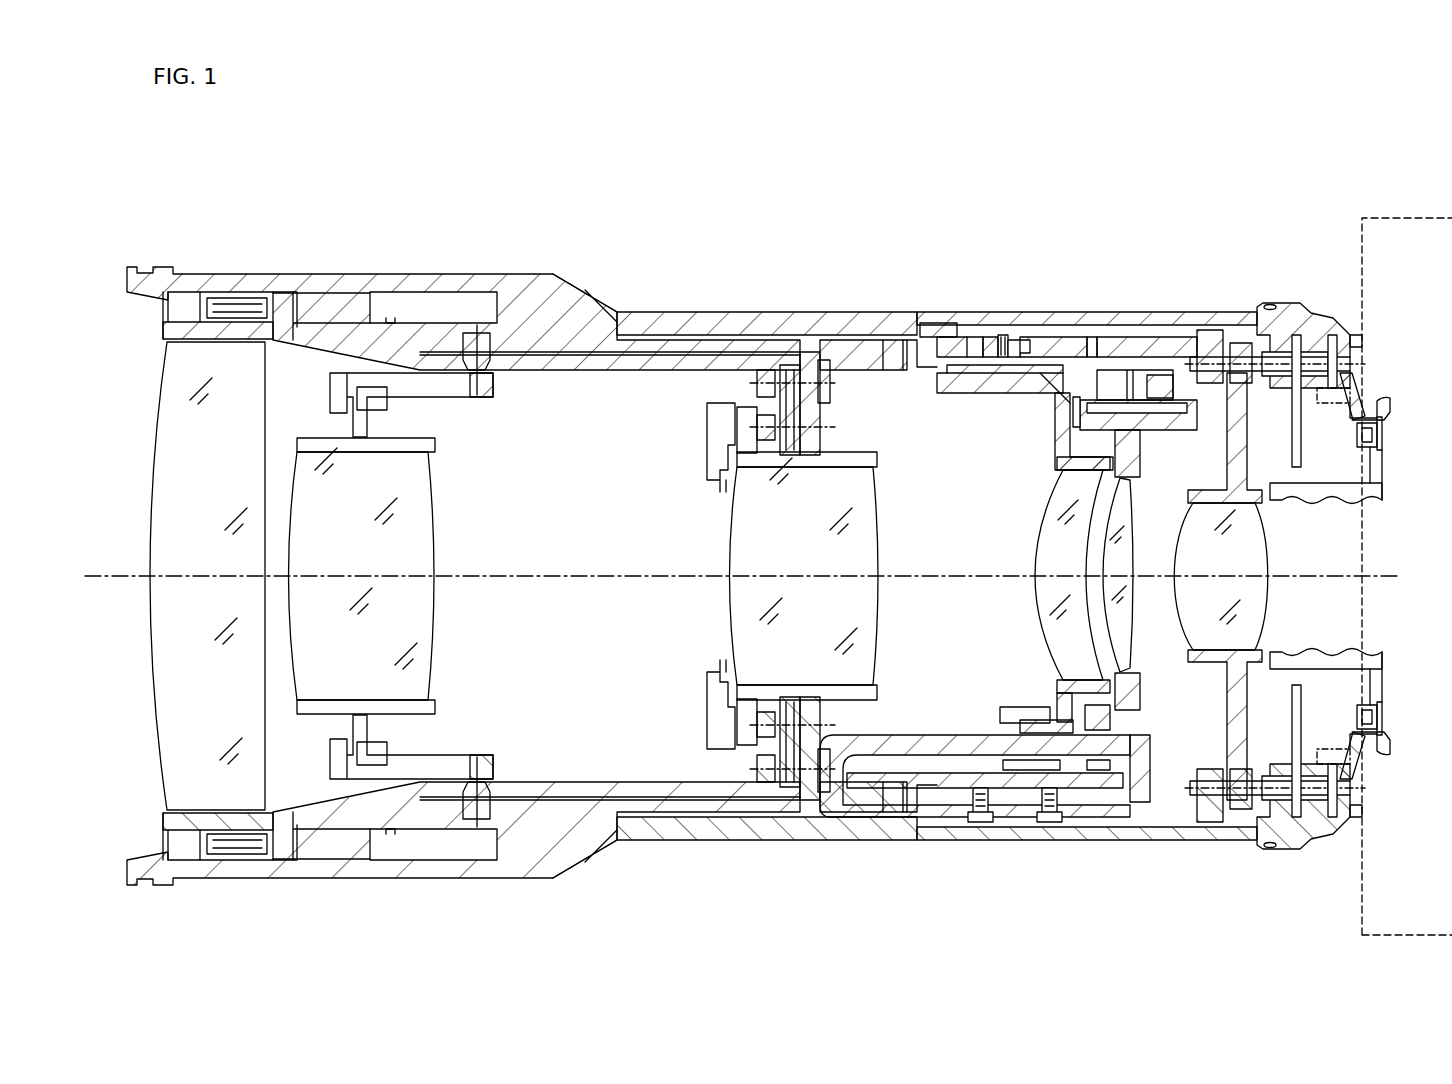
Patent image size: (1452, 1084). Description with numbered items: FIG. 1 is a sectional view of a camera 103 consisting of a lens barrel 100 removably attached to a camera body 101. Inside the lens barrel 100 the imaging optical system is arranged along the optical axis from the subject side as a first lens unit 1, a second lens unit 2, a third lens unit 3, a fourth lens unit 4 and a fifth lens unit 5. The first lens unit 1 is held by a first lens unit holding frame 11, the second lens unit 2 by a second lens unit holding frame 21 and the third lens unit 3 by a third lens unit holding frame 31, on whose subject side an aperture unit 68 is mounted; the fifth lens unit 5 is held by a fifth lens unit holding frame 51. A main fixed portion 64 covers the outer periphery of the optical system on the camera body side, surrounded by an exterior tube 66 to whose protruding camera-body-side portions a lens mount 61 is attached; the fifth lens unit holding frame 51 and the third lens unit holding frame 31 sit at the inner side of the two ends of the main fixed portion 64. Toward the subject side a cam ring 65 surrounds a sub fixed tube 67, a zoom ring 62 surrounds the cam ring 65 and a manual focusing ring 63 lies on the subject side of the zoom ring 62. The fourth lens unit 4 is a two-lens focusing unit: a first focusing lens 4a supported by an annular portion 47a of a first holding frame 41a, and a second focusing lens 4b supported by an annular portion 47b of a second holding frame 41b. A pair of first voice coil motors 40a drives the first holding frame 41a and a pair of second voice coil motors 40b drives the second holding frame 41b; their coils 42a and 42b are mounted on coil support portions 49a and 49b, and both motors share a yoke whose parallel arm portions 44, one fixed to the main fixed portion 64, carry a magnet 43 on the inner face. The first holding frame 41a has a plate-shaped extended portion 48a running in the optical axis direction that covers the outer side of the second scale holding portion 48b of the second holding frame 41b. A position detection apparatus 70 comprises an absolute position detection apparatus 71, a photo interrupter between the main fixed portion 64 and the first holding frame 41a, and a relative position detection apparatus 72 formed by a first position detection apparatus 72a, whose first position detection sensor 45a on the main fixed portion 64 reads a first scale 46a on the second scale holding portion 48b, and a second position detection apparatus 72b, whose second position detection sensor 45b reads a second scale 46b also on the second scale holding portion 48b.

The lens barrel 100 is at (491, 200).
The camera body 101 is at (1410, 218).
The camera 103 is at (1234, 146).
The first lens unit 1 is at (168, 468).
The second lens unit 2 is at (416, 488).
The third lens unit 3 is at (745, 540).
The fourth lens unit 4 is at (958, 604).
The first focusing lens 4a is at (1040, 550).
The second focusing lens 4b is at (1115, 590).
The fifth lens unit 5 is at (1256, 540).
The first lens unit holding frame 11 is at (166, 330).
The second lens unit holding frame 21 is at (436, 440).
The third lens unit holding frame 31 is at (855, 455).
The first voice coil motor 40a is at (985, 846).
The second voice coil motor 40b is at (1097, 846).
The first holding frame 41a is at (1035, 465).
The second holding frame 41b is at (1172, 446).
The coil 42a is at (1023, 770).
The coil 42b is at (1100, 770).
The magnet 43 is at (967, 787).
The arm portion 44 is at (893, 750).
The first position detection sensor 45a is at (1013, 347).
The second position detection sensor 45b is at (1153, 373).
The first scale 46a is at (950, 345).
The second scale 46b is at (1100, 400).
The annular portion 47a is at (1057, 452).
The annular portion 47b is at (1140, 462).
The extended portion 48a is at (975, 380).
The second scale holding portion 48b is at (1193, 427).
The coil support portion 49a is at (1033, 705).
The coil support portion 49b is at (1133, 697).
The fifth lens unit holding frame 51 is at (1237, 700).
The lens mount 61 is at (1342, 343).
The zoom ring 62 is at (585, 303).
The manual focusing ring 63 is at (323, 300).
The main fixed portion 64 is at (1230, 340).
The cam ring 65 is at (700, 338).
The exterior tube 66 is at (1207, 317).
The sub fixed tube 67 is at (610, 365).
The aperture unit 68 is at (712, 438).
The position detection apparatus 70 is at (1090, 158).
The absolute position detection apparatus 71 is at (917, 340).
The relative position detection apparatus 72 is at (1140, 200).
The first position detection apparatus 72a is at (996, 300).
The second position detection apparatus 72b is at (1140, 342).